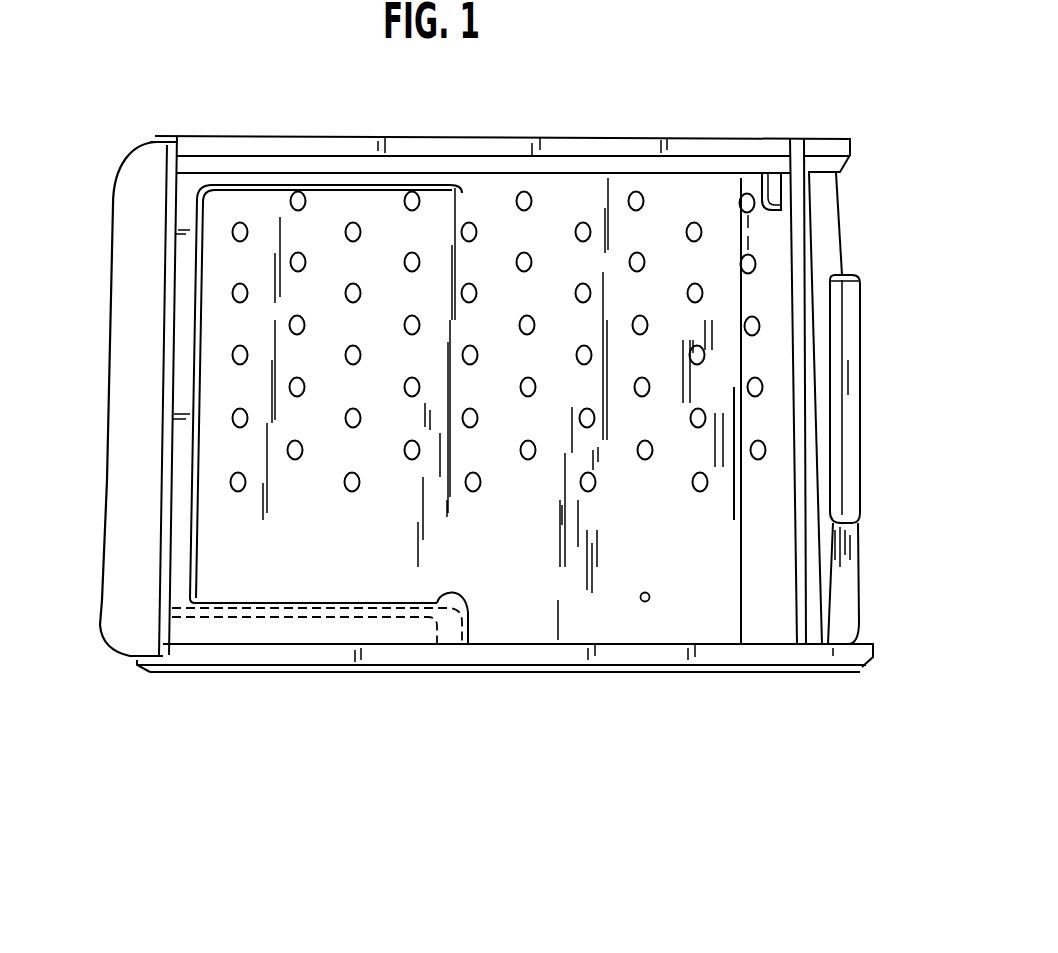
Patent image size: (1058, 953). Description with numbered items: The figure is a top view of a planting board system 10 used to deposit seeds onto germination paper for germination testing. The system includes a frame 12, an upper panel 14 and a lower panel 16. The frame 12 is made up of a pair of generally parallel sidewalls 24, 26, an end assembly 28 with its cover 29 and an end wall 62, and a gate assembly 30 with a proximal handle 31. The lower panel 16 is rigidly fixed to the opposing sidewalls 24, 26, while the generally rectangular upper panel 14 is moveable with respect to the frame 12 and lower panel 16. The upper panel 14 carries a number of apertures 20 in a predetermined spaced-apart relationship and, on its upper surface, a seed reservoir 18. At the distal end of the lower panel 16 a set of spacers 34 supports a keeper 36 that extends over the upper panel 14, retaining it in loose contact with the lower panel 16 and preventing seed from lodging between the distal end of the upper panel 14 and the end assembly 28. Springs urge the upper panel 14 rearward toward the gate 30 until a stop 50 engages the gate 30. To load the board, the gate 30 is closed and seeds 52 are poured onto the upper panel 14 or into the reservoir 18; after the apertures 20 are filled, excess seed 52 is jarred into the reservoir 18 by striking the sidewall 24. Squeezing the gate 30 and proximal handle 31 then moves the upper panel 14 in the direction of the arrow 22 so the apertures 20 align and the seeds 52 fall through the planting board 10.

The planting board system 10 is at (495, 718).
The frame 12 is at (702, 697).
The upper panel 14 is at (860, 597).
The lower panel 16 is at (878, 533).
The seed reservoir 18 is at (297, 578).
The apertures 20 is at (236, 492).
The arrow 22 is at (880, 378).
The sidewall 24 is at (768, 665).
The sidewall 26 is at (513, 136).
The end assembly 28 is at (90, 408).
The cover 29 is at (110, 325).
The gate assembly 30 is at (807, 223).
The proximal handle 31 is at (862, 312).
The spacers 34 is at (437, 643).
The keeper 36 is at (503, 644).
The stop 50 is at (772, 178).
The seeds 52 is at (645, 603).
The end wall 62 is at (92, 201).